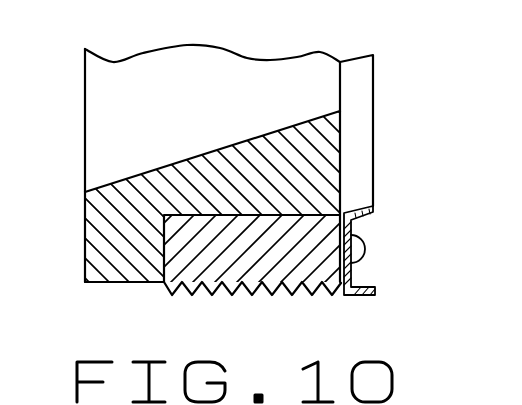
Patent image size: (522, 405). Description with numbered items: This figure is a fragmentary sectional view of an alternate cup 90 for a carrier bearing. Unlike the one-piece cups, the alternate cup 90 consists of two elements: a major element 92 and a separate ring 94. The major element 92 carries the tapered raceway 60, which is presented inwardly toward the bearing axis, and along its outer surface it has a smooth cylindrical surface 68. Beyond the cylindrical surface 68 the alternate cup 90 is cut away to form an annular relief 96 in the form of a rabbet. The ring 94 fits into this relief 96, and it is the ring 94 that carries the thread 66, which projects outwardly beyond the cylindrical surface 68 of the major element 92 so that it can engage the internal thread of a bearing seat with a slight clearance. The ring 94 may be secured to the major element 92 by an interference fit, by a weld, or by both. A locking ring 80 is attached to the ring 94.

The tapered raceway 60 is at (160, 166).
The major element 92 is at (112, 222).
The cylindrical surface 68 is at (97, 283).
The annular relief 96 is at (425, 256).
The thread 66 is at (335, 335).
The ring 94 is at (428, 290).
The locking ring 80 is at (408, 218).
The alternate cup 90 is at (417, 58).